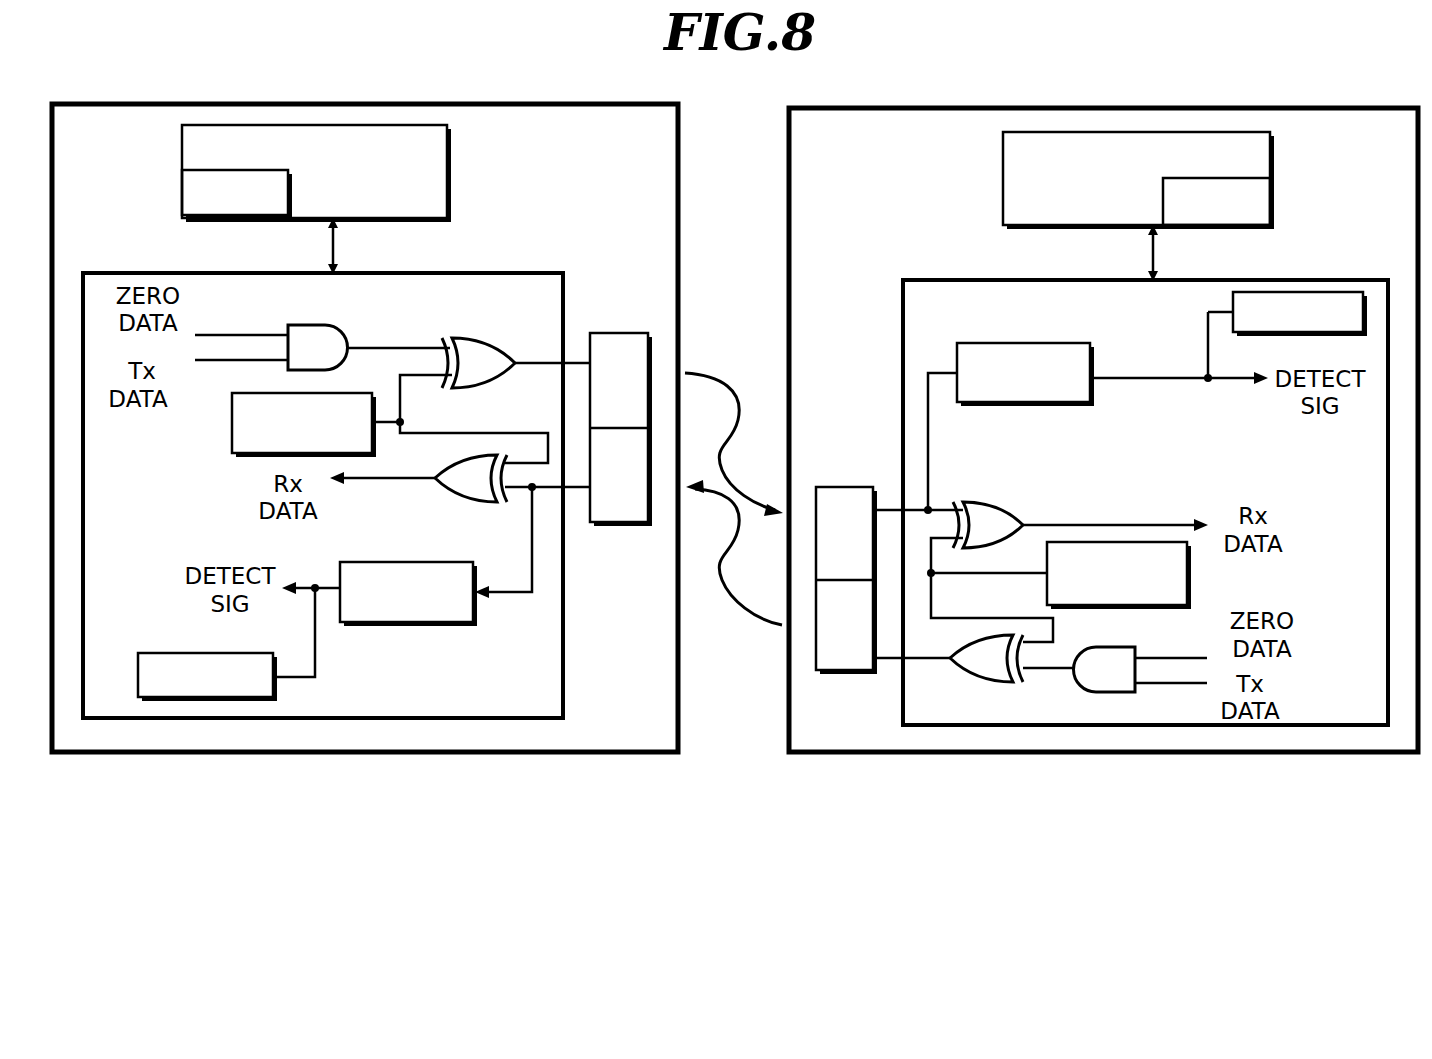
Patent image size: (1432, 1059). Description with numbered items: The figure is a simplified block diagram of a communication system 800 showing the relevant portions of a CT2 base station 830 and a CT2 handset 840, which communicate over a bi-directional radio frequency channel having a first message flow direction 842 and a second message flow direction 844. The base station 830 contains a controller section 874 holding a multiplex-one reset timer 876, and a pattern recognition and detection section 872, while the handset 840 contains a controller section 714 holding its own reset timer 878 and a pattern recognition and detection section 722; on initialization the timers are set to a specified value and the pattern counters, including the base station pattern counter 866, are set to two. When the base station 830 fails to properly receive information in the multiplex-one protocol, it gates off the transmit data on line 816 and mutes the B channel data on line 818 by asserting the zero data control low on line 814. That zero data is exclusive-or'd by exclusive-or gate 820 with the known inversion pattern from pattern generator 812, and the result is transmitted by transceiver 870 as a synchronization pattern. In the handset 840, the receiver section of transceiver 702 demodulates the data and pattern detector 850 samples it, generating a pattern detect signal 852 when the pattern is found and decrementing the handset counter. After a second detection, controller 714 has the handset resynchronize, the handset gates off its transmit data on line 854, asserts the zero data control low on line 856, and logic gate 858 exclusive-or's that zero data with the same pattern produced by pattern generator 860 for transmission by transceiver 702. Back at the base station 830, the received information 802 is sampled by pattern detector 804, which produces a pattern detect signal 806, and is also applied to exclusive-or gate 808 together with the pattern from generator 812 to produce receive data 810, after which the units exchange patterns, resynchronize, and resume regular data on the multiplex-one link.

The communication system 800 is at (183, 825).
The CT2 base station 830 is at (473, 102).
The CT2 handset 840 is at (1250, 107).
The controller section 874 is at (452, 173).
The MUX 1 reset timer 876 is at (180, 190).
The pattern recognition and detection section 872 is at (460, 270).
The zero data control line 814 is at (268, 335).
The transmit data line 816 is at (227, 360).
The B channel data line 818 is at (410, 345).
The exclusive-or gate 820 is at (500, 342).
The pattern generator 812 is at (228, 422).
The transceiver 870 is at (622, 332).
The exclusive-or gate 808 is at (448, 495).
The receive data 810 is at (385, 477).
The received information 802 is at (522, 497).
The pattern detector 804 is at (445, 628).
The pattern detect signal 806 is at (310, 578).
The pattern counter 866 is at (168, 653).
The first message flow direction 842 is at (725, 388).
The second message flow direction 844 is at (735, 602).
The controller section 714 is at (1277, 167).
The MUX 1 reset timer 878 is at (1277, 202).
The pattern recognition and detection section 722 is at (975, 277).
The pattern detector 850 is at (1038, 343).
The pattern detect signal 852 is at (1153, 383).
The transceiver 702 is at (845, 485).
The pattern generator 860 is at (1195, 595).
The logic gate 858 is at (965, 678).
The transmit data line 854 is at (1178, 686).
The zero data control line 856 is at (1155, 657).